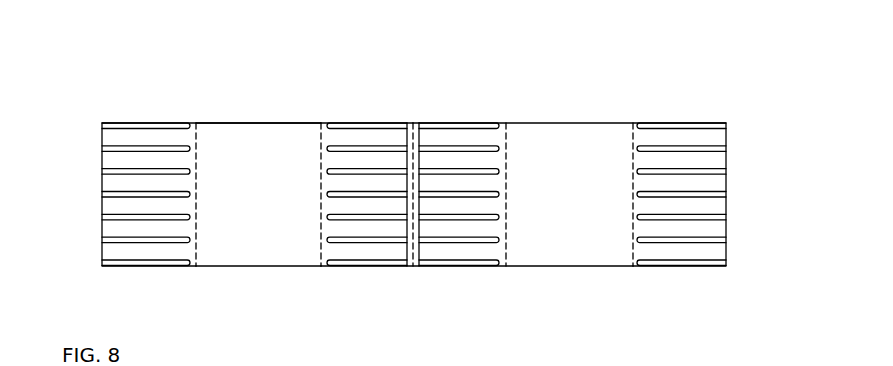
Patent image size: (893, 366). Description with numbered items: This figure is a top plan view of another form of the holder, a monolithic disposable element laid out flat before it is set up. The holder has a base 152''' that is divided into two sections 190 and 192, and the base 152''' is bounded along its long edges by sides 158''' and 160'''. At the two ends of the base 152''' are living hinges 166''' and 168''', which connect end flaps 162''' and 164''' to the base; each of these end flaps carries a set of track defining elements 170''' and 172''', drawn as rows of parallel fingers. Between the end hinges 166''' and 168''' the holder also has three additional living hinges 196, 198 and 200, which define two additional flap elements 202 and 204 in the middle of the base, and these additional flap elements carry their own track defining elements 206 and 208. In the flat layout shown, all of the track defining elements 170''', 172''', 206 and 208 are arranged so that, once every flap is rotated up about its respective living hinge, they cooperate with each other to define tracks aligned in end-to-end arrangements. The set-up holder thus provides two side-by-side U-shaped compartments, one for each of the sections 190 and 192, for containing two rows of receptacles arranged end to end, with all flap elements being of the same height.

The section 190 is at (252, 117).
The section 192 is at (560, 117).
The base 152''' is at (258, 293).
The side 158''' is at (477, 293).
The side 160''' is at (286, 93).
The end flap 162''' is at (116, 204).
The end flap 164''' is at (718, 200).
The living hinge 166''' is at (211, 164).
The living hinge 168''' is at (649, 221).
The track defining elements 170''' is at (116, 177).
The track defining elements 172''' is at (718, 173).
The living hinge 196 is at (313, 268).
The living hinge 198 is at (416, 243).
The living hinge 200 is at (508, 222).
The additional flap element 202 is at (336, 174).
The additional flap element 204 is at (492, 201).
The track defining elements 206 is at (328, 191).
The track defining elements 208 is at (497, 173).